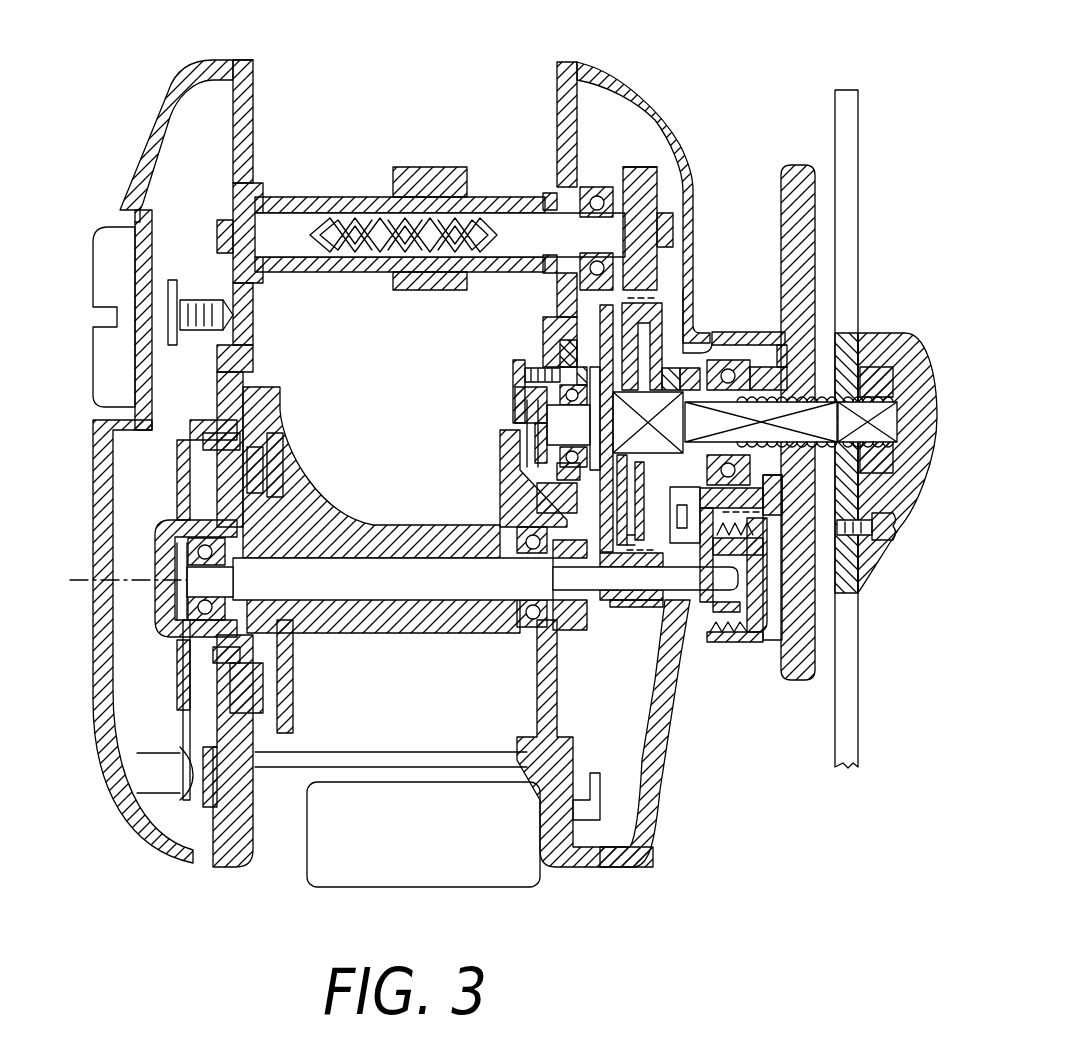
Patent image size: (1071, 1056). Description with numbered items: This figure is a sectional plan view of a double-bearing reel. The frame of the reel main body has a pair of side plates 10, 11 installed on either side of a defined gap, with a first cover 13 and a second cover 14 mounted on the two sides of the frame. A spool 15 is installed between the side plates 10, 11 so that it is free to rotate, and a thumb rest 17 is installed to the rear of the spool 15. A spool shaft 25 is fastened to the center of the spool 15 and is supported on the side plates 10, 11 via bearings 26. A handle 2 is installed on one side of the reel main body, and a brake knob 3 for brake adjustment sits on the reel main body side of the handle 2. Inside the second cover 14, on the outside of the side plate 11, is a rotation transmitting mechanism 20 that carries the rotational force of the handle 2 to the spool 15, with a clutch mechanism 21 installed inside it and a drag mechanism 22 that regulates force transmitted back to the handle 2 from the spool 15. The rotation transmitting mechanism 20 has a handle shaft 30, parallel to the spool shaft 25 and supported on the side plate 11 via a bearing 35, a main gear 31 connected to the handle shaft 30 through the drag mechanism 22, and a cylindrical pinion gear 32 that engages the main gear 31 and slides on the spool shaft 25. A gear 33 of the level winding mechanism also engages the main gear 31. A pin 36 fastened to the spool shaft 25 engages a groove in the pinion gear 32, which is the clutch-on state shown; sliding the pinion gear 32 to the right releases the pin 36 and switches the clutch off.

The handle 2 is at (840, 112).
The brake knob 3 is at (795, 165).
The side plate 10 is at (260, 102).
The side plate 11 is at (553, 77).
The first cover 13 is at (158, 102).
The second cover 14 is at (622, 82).
The spool 15 is at (373, 535).
The thumb rest 17 is at (467, 888).
The rotation transmitting mechanism 20 is at (593, 333).
The clutch mechanism 21 is at (640, 632).
The drag mechanism 22 is at (670, 282).
The spool shaft 25 is at (432, 582).
The bearings 26 is at (530, 555).
The handle shaft 30 is at (838, 410).
The main gear 31 is at (612, 525).
The pinion gear 32 is at (652, 608).
The gear 33 is at (640, 157).
The bearing 35 is at (540, 407).
The pin 36 is at (567, 632).